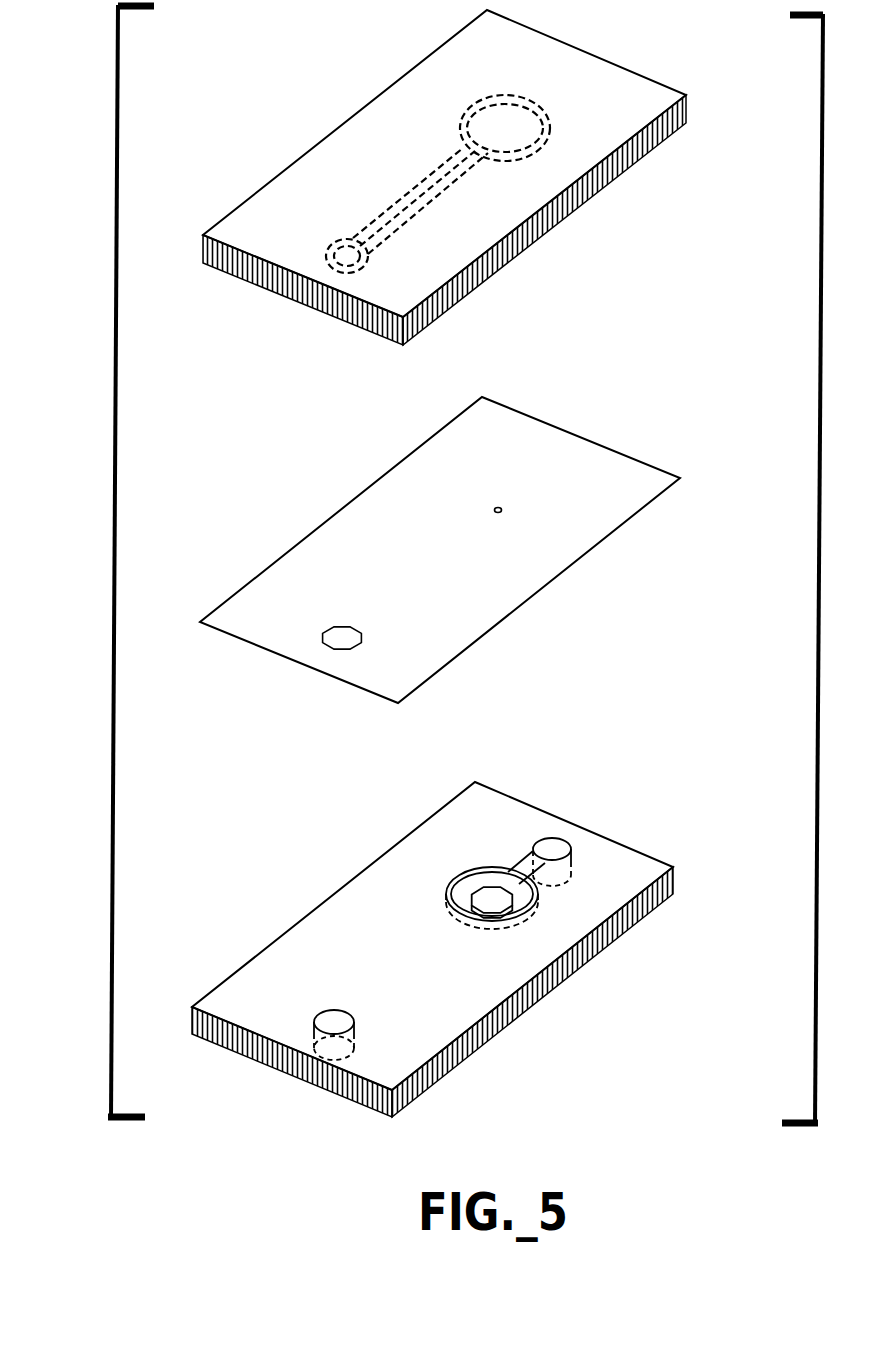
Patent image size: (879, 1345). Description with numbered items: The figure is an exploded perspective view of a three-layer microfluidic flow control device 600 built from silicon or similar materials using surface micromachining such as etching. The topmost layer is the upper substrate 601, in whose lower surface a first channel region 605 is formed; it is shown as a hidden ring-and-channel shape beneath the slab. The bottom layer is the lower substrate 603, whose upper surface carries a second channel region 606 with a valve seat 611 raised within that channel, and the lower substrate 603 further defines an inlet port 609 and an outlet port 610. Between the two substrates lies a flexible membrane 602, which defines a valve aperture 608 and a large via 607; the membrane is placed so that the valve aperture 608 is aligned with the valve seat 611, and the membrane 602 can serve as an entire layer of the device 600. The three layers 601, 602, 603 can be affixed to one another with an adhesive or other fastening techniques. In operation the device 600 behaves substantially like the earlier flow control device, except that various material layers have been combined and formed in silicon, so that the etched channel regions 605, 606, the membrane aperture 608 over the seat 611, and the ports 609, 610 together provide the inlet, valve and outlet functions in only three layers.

The device 600 is at (116, 532).
The upper substrate 601 is at (663, 143).
The flexible membrane 602 is at (653, 502).
The lower substrate 603 is at (652, 913).
The first channel region 605 is at (418, 193).
The second channel region 606 is at (550, 848).
The large via 607 is at (330, 622).
The valve aperture 608 is at (502, 503).
The inlet port 609 is at (330, 1012).
The outlet port 610 is at (573, 883).
The valve seat 611 is at (478, 887).